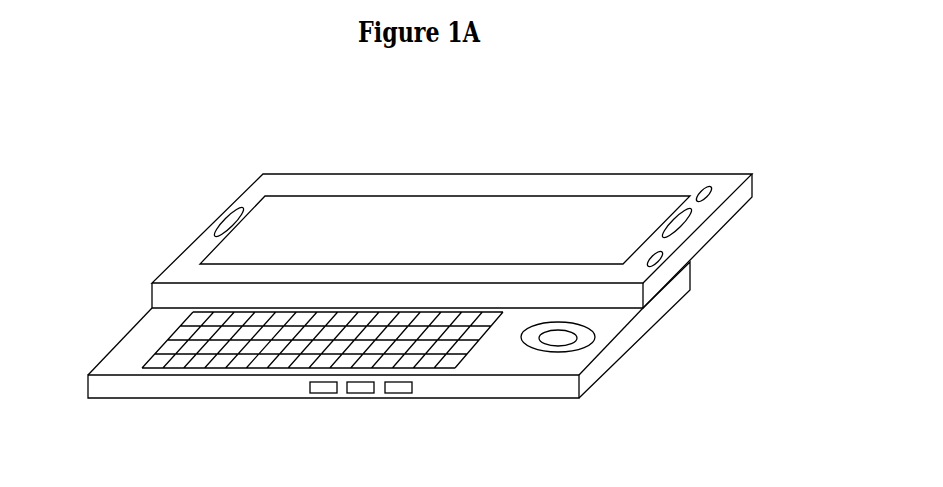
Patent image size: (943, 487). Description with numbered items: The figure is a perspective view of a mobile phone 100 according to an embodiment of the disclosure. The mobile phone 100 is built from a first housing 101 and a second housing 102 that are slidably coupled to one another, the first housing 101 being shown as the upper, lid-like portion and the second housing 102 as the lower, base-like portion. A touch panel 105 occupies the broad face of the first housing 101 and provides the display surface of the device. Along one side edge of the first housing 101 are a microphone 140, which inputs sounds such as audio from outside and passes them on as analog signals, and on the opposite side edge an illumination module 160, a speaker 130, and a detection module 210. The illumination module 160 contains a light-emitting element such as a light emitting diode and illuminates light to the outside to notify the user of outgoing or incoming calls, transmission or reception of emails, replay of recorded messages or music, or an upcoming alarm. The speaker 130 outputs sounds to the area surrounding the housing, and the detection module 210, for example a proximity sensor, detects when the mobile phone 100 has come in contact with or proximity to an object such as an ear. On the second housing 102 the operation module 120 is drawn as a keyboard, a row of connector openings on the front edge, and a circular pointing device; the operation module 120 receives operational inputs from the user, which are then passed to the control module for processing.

The mobile phone 100 is at (573, 165).
The first housing 101 is at (262, 181).
The second housing 102 is at (237, 397).
The touch panel 105 is at (443, 203).
The operation module 120 is at (168, 364).
The speaker 130 is at (680, 222).
The microphone 140 is at (228, 219).
The illumination module 160 is at (710, 191).
The detection module 210 is at (657, 260).